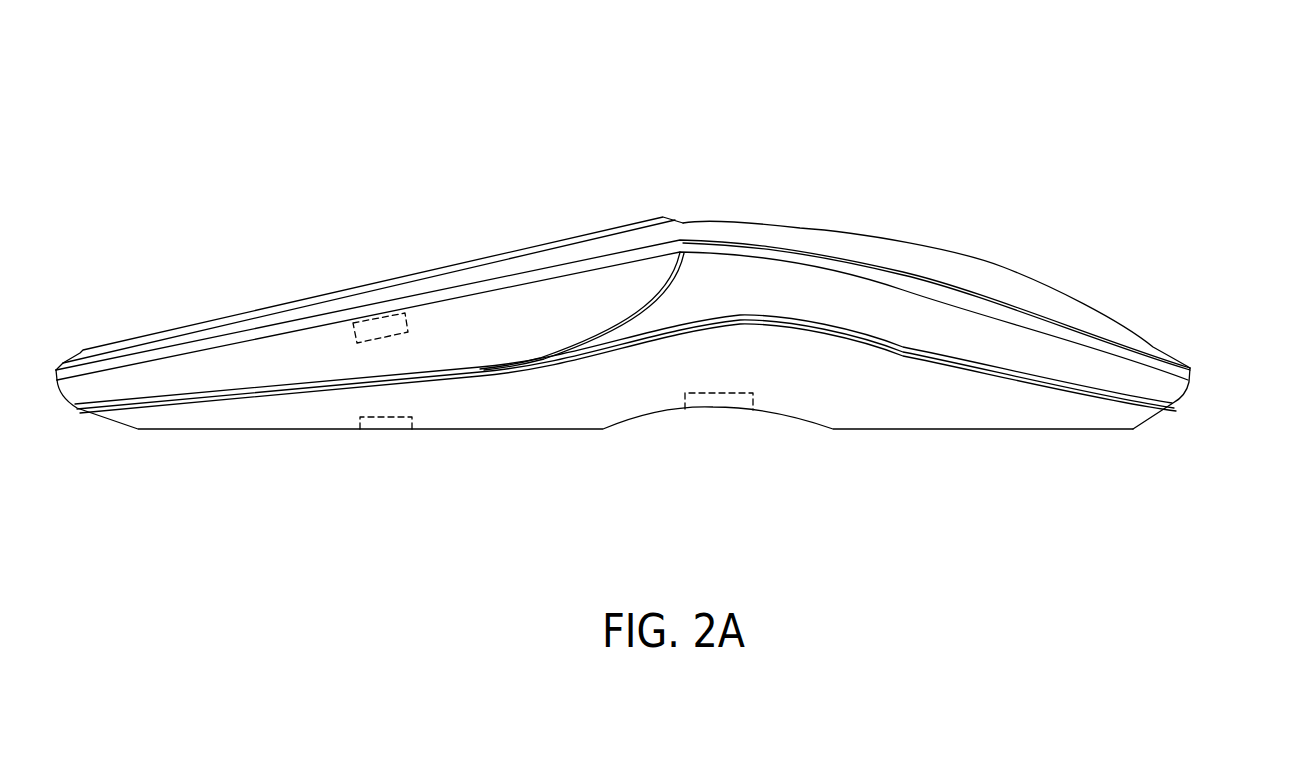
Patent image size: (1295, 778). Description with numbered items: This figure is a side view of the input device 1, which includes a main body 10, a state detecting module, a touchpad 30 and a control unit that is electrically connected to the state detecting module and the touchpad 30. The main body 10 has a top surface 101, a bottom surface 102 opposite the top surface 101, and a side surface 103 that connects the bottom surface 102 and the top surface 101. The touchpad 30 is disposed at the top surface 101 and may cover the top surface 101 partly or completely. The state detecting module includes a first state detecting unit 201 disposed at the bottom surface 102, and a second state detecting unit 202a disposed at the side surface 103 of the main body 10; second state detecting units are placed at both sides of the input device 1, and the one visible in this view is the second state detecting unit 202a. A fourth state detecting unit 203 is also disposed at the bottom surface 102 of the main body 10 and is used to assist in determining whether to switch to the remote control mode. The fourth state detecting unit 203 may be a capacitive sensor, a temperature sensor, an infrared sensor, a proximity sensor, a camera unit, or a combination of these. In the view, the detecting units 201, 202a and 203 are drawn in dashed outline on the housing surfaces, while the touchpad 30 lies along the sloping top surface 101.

The input device 1 is at (288, 130).
The main body 10 is at (1230, 282).
The top surface 101 is at (1122, 338).
The bottom surface 102 is at (1070, 435).
The side surface 103 is at (1167, 387).
The touchpad 30 is at (558, 240).
The first state detecting unit 201 is at (387, 429).
The second state detecting unit 202a is at (373, 330).
The fourth state detecting unit 203 is at (725, 398).